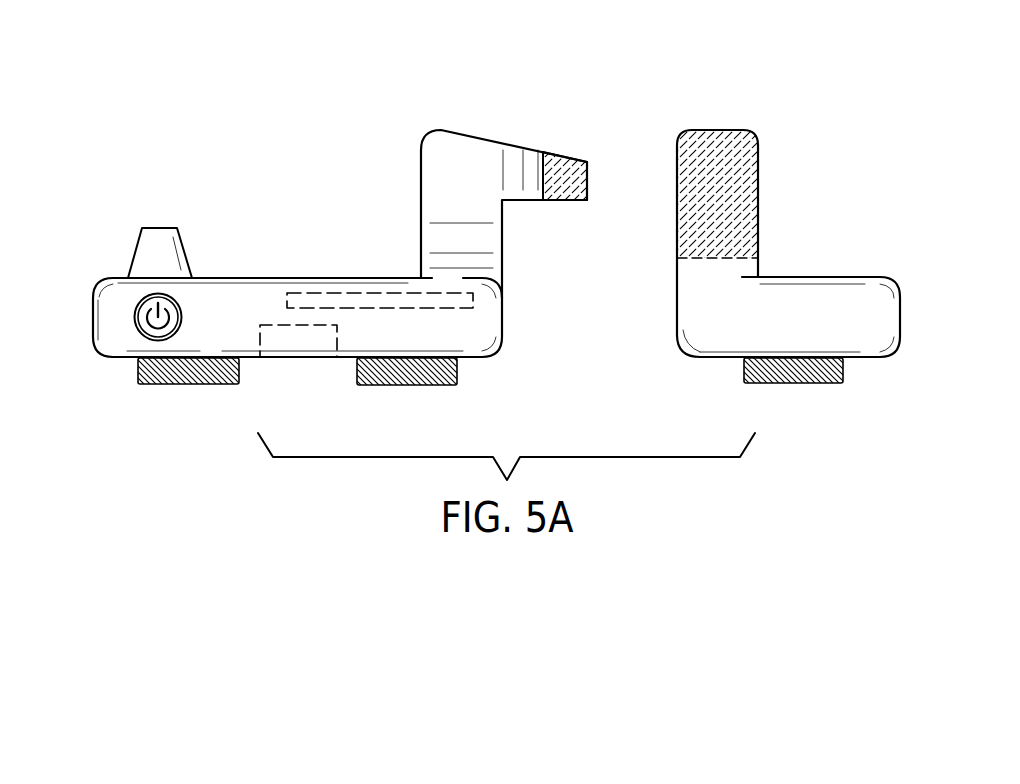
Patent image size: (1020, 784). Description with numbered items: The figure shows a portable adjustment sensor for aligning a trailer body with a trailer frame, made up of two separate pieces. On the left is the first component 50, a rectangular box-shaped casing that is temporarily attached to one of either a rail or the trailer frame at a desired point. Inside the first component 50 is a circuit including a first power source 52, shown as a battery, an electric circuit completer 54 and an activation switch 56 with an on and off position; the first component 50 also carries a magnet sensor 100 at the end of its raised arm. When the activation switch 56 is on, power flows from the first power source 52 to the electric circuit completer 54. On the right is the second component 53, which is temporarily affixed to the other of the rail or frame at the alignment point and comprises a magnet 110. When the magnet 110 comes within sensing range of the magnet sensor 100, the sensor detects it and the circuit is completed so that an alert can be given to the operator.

The first component 50 is at (263, 278).
The first power source 52 is at (283, 357).
The second component 53 is at (843, 277).
The electric circuit completer 54 is at (355, 297).
The activation switch 56 is at (137, 323).
The magnet sensor 100 is at (560, 158).
The magnet 110 is at (745, 130).